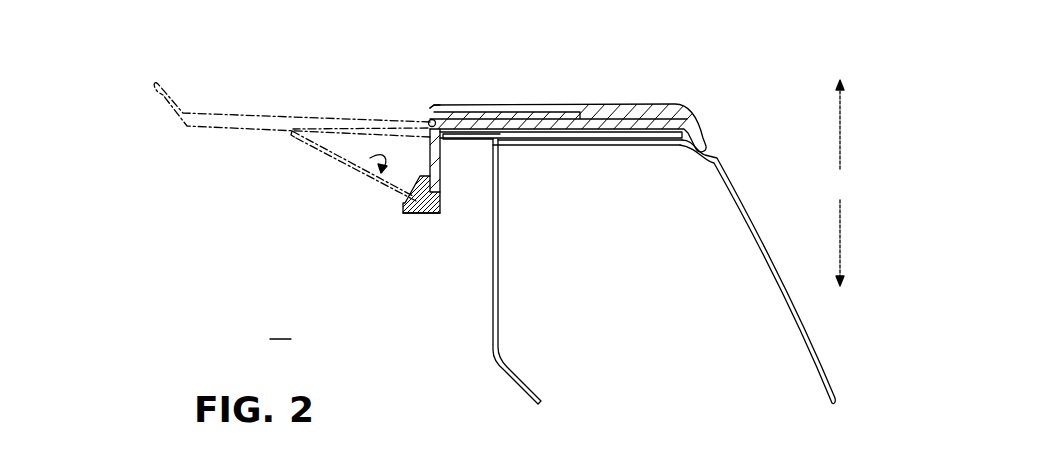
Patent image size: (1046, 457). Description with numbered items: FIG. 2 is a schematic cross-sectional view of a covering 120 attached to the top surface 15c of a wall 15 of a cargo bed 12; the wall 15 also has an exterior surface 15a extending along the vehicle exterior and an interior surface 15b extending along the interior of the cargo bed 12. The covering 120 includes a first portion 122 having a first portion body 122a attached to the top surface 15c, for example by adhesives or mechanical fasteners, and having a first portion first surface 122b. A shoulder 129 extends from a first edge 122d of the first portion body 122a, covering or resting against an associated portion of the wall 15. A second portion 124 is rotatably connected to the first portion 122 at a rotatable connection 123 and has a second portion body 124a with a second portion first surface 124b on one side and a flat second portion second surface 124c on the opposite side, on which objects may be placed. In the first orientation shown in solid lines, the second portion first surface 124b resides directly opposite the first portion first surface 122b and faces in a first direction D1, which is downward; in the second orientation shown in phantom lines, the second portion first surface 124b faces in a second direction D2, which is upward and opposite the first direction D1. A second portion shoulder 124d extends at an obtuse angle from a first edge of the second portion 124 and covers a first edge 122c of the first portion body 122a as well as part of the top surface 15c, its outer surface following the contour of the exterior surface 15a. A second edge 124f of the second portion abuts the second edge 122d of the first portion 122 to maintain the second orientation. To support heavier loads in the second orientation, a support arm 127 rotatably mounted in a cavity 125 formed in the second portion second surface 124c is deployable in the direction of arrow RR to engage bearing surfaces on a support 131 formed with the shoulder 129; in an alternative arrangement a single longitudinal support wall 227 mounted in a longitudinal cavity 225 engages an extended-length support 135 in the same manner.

The cargo bed 12 is at (281, 331).
The wall 15 is at (661, 272).
The exterior surface 15a is at (818, 343).
The interior surface 15b is at (494, 354).
The top surface 15c is at (548, 142).
The covering 120 is at (715, 79).
The first portion 122 is at (622, 133).
The first portion body 122a is at (584, 140).
The first portion first surface 122b is at (603, 108).
The first edge of the first portion body 122c is at (712, 138).
The second edge of the first portion 122d is at (432, 132).
The rotatable connection 123 is at (428, 121).
The second portion 124 is at (594, 103).
The second portion body 124a is at (581, 105).
The second portion first surface 124b is at (232, 113).
The second portion second surface 124c is at (640, 101).
The second portion shoulder 124d is at (695, 124).
The second edge of the second portion 124f is at (430, 107).
The cavity 125 is at (330, 84).
The longitudinal cavity 225 is at (325, 132).
The support arm 127 is at (307, 205).
The longitudinal support wall 227 is at (383, 140).
The shoulder 129 is at (441, 167).
The support 131 is at (412, 282).
The extended-length support 135 is at (428, 214).
The direction of deployment arrow RR is at (370, 158).
The first direction D1 is at (847, 242).
The second direction D2 is at (847, 120).